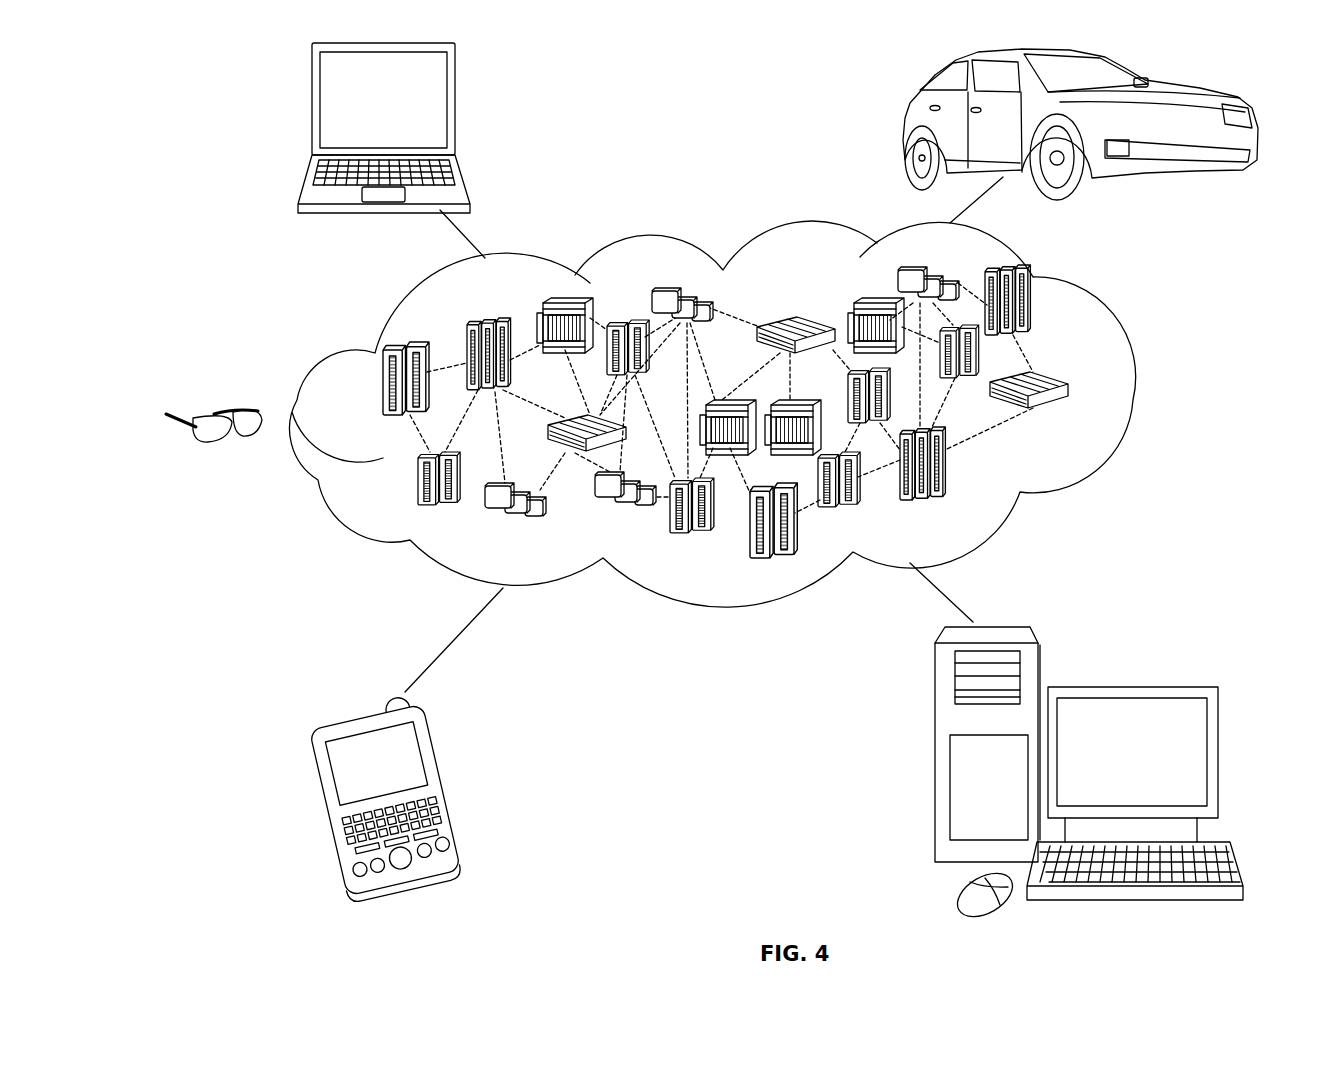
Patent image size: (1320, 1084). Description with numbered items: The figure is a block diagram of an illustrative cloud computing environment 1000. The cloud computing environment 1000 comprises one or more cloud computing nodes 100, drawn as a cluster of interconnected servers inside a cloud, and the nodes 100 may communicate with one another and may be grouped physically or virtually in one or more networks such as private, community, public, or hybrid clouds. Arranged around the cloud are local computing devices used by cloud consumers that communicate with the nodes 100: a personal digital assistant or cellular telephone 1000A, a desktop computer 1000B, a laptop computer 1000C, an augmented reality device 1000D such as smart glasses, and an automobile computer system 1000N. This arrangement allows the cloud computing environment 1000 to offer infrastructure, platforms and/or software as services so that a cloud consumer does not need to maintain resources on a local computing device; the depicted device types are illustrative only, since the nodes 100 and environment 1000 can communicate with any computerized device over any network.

The laptop computer 1000C is at (455, 110).
The automobile computer system 1000N is at (900, 125).
The cloud computing environment 1000 is at (1133, 390).
The cloud computing nodes 100 is at (1071, 419).
The augmented reality device 1000D is at (195, 440).
The personal digital assistant (PDA) or cellular telephone 1000A is at (445, 788).
The desktop computer 1000B is at (1130, 688).